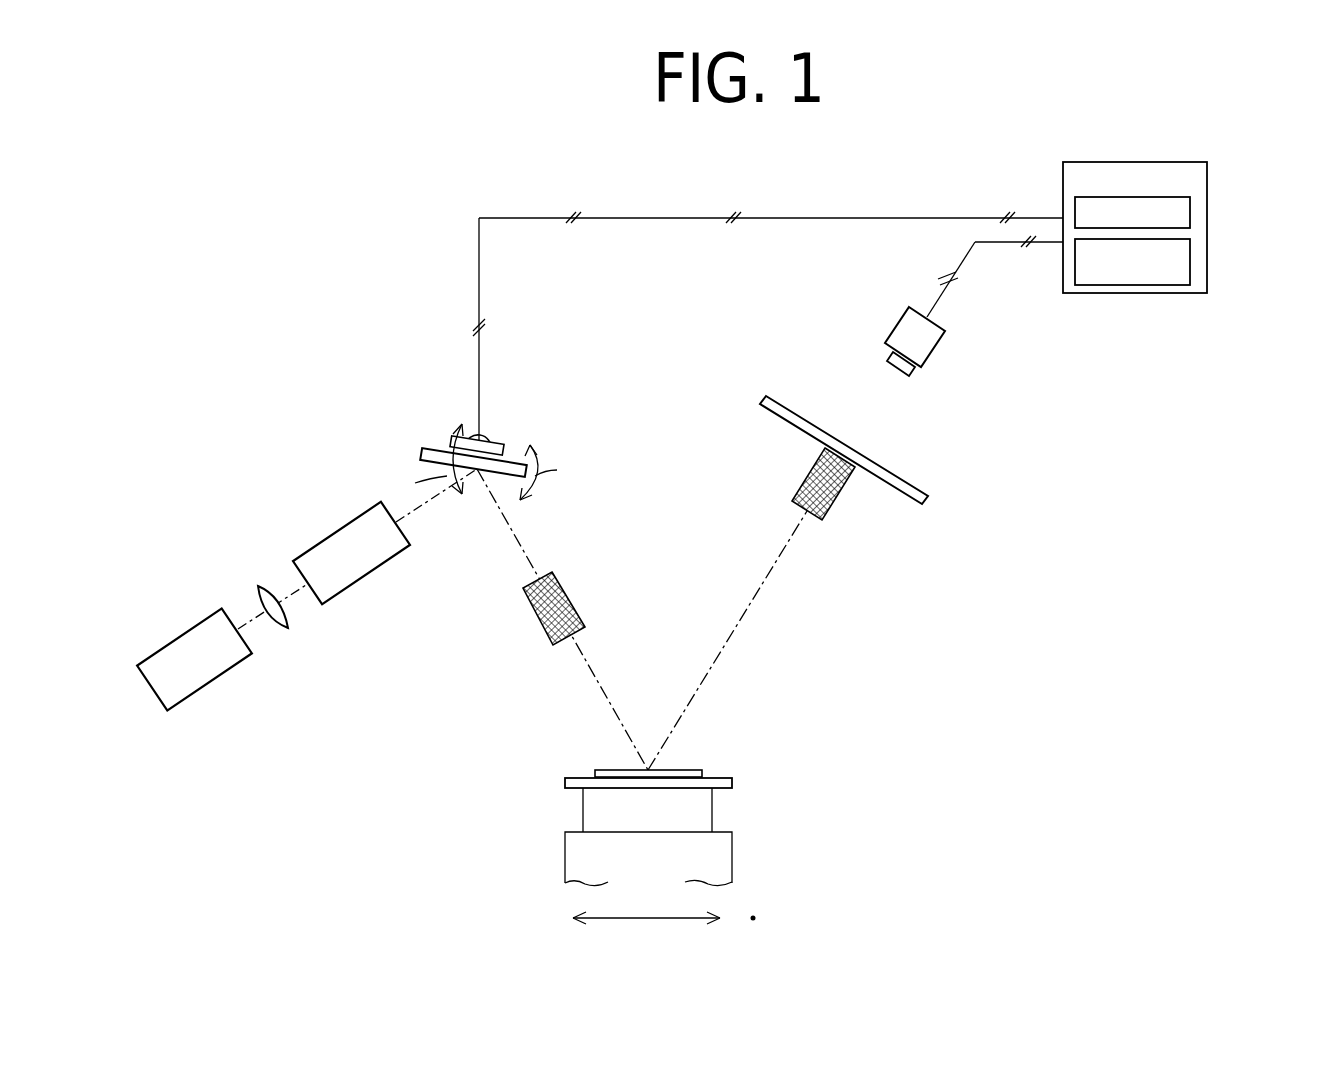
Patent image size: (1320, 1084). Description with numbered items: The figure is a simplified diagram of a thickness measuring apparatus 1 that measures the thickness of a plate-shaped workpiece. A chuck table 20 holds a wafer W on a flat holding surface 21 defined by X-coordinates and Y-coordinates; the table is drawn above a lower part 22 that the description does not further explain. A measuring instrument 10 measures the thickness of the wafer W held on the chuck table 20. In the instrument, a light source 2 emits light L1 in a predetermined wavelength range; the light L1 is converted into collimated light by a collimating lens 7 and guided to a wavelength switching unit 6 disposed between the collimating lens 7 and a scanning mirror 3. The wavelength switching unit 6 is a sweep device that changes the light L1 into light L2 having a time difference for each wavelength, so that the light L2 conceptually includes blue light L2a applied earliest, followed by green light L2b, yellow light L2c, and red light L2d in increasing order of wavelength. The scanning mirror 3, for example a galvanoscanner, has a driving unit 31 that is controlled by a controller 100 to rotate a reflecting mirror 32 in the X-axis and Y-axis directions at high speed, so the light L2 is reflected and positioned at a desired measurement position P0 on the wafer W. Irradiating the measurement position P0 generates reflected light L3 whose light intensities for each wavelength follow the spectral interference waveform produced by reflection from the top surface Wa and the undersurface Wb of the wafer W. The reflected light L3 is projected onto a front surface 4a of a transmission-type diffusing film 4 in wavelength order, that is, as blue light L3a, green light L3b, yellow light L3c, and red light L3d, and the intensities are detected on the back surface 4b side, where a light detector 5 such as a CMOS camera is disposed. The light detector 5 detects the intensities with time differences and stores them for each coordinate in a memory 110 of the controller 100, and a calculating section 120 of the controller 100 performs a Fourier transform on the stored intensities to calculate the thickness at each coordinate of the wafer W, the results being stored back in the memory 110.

The thickness measuring apparatus 1 is at (256, 343).
The light source 2 is at (180, 640).
The scanning mirror 3 is at (502, 436).
The diffusing film 4 is at (872, 471).
The front surface 4a is at (903, 498).
The back surface 4b is at (912, 482).
The light detector 5 is at (952, 353).
The wavelength switching unit 6 is at (370, 578).
The collimating lens 7 is at (285, 625).
The measuring instrument 10 is at (510, 380).
The chuck table 20 is at (642, 814).
The holding surface 21 is at (703, 779).
The stage base 22 is at (725, 857).
The driving unit 31 is at (450, 444).
The reflecting mirror 32 is at (508, 482).
The controller 100 is at (1170, 193).
The memory 110 is at (1190, 216).
The calculating section 120 is at (1190, 270).
The light L1 is at (250, 620).
The light L2 is at (456, 696).
The blue light L2a is at (550, 642).
The green light L2b is at (545, 626).
The yellow light L2c is at (538, 606).
The red light L2d is at (528, 591).
The reflected light L3 is at (752, 598).
The blue light L3a is at (822, 456).
The green light L3b is at (812, 470).
The yellow light L3c is at (801, 485).
The red light L3d is at (795, 504).
The wafer W is at (705, 765).
The top surface Wa is at (622, 769).
The undersurface Wb is at (690, 777).
The measurement position P0 is at (652, 770).